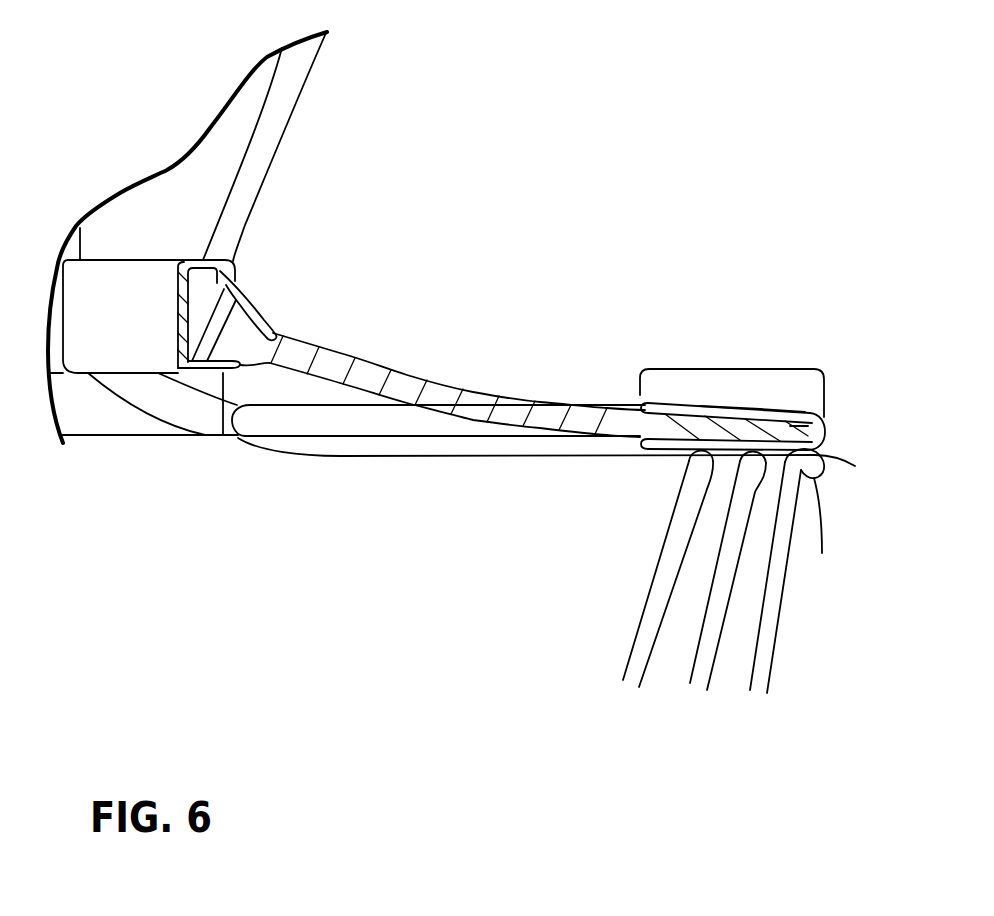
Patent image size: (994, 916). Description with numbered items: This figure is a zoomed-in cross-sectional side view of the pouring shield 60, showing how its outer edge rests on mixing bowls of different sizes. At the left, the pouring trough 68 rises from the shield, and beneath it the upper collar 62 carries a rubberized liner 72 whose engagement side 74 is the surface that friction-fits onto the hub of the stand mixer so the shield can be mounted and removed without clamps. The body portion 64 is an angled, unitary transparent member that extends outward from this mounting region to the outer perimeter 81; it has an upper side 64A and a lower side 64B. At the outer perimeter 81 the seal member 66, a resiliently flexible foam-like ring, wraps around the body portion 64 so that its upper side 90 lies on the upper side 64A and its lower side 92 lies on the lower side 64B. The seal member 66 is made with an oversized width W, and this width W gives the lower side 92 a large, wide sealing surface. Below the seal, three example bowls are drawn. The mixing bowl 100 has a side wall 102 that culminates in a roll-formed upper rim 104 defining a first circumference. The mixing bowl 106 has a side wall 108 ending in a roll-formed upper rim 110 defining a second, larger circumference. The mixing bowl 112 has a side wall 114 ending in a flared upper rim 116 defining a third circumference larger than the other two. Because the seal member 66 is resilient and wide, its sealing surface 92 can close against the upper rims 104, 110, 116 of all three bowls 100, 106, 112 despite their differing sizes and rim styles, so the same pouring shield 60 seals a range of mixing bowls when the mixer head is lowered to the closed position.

The pouring shield 60 is at (392, 265).
The upper collar 62 is at (268, 307).
The body portion 64 is at (454, 378).
The upper side 64A is at (693, 417).
The lower side 64B is at (683, 460).
The seal member 66 is at (757, 402).
The pouring trough 68 is at (283, 137).
The rubberized liner 72 is at (240, 296).
The engagement side 74 is at (155, 292).
The outer perimeter 81 is at (793, 432).
The upper side of seal member 90 is at (781, 409).
The lower side of seal member 92 is at (817, 449).
The width W is at (717, 369).
The mixing bowl 100 is at (631, 647).
The side wall 102 is at (669, 583).
The upper rim 104 is at (707, 487).
The mixing bowl 106 is at (692, 662).
The side wall 108 is at (718, 662).
The upper rim 110 is at (757, 490).
The mixing bowl 112 is at (779, 677).
The side wall 114 is at (778, 640).
The upper rim 116 is at (857, 530).